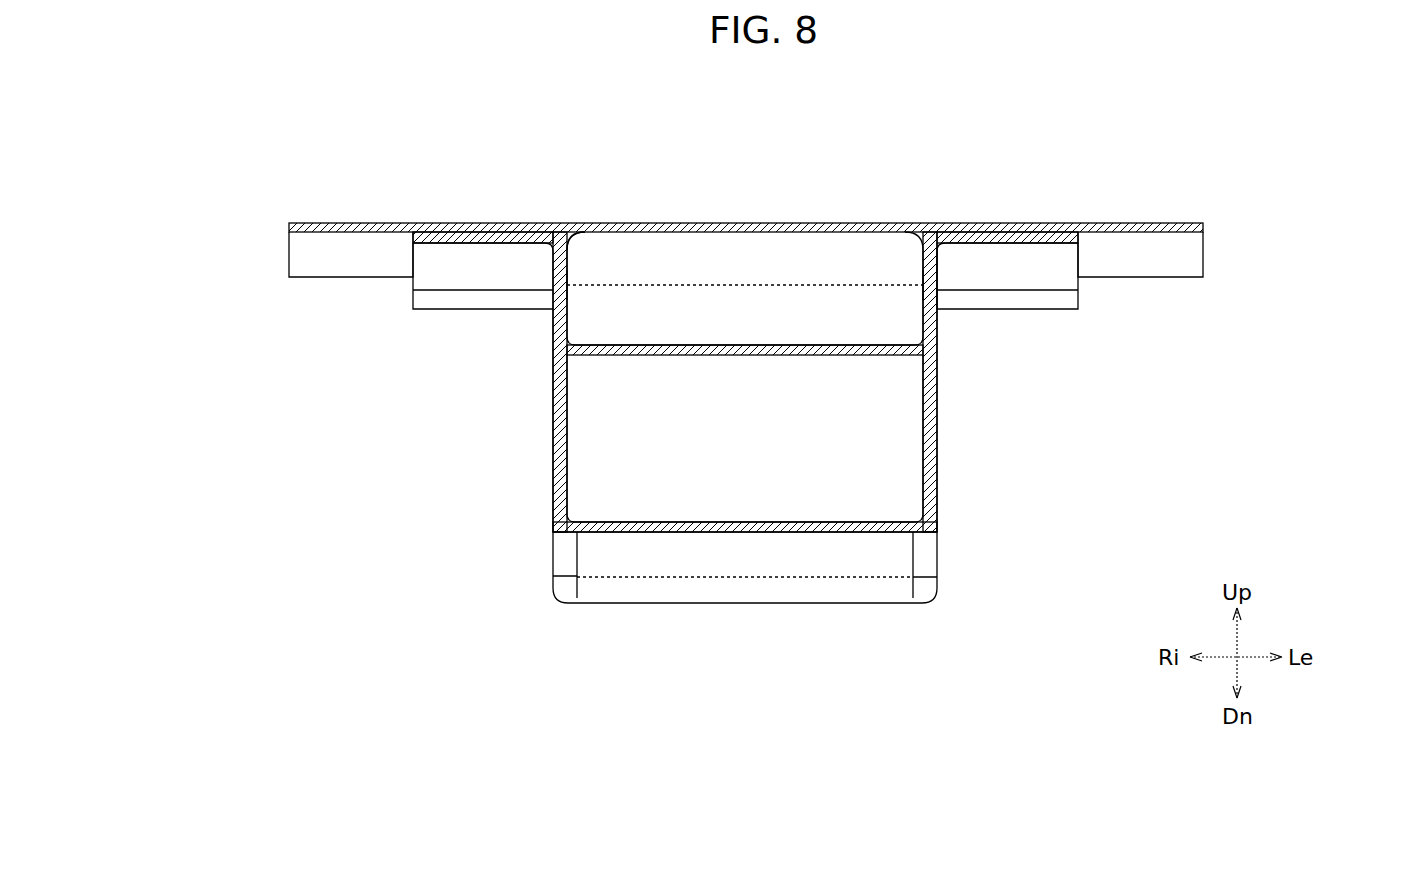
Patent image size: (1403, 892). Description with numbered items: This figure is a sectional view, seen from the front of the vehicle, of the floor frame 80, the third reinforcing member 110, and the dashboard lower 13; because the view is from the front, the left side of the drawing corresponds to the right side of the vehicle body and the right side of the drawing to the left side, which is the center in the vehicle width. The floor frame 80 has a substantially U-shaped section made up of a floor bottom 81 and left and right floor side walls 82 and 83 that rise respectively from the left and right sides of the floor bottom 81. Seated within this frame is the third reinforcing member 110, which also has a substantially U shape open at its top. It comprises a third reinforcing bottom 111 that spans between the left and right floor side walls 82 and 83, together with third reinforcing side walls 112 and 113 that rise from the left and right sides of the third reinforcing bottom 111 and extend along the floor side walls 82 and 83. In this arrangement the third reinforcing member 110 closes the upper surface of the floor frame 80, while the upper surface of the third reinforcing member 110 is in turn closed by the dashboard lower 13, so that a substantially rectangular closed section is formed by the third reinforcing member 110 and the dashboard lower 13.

The dashboard lower 13 is at (362, 223).
The floor frame 80 is at (745, 451).
The floor bottom 81 is at (724, 522).
The left floor side wall 82 is at (937, 428).
The right floor side wall 83 is at (553, 432).
The third reinforcing member 110 is at (580, 256).
The third reinforcing bottom 111 is at (716, 345).
The third reinforcing side wall 112 is at (922, 295).
The third reinforcing side wall 113 is at (568, 292).